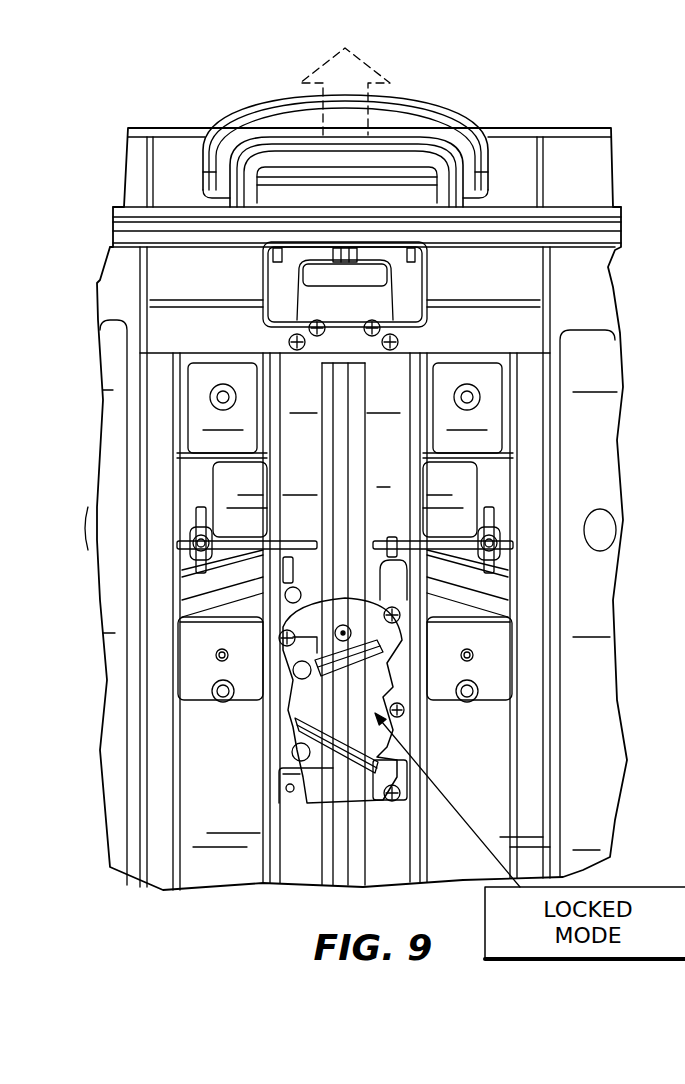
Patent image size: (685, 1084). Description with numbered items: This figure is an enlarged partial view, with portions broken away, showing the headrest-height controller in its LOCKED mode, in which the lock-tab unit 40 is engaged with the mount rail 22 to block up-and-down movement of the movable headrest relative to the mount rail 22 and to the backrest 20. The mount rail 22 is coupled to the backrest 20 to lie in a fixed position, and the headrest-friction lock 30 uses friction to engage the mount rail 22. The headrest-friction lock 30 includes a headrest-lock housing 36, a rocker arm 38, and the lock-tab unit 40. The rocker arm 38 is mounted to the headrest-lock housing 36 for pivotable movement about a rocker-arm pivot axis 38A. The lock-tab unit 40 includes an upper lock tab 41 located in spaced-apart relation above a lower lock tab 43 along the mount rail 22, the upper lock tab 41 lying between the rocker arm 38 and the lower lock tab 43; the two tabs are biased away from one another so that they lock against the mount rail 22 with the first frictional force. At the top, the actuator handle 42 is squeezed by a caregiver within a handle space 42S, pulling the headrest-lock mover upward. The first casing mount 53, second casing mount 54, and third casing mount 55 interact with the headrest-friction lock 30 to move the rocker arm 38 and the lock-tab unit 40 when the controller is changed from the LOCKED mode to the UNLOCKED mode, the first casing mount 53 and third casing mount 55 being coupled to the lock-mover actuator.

The backrest 20 is at (587, 287).
The mount rail 22 is at (343, 868).
The headrest-friction lock 30 is at (151, 792).
The headrest-lock housing 36 is at (272, 732).
The rocker arm 38 is at (264, 604).
The rocker-arm pivot axis 38A is at (398, 620).
The lock-tab unit 40 is at (311, 775).
The upper lock tab 41 is at (393, 696).
The actuator handle 42 is at (456, 130).
The handle space 42S is at (441, 110).
The lower lock tab 43 is at (391, 801).
The first casing mount 53 is at (422, 814).
The second casing mount 54 is at (422, 601).
The third casing mount 55 is at (261, 641).